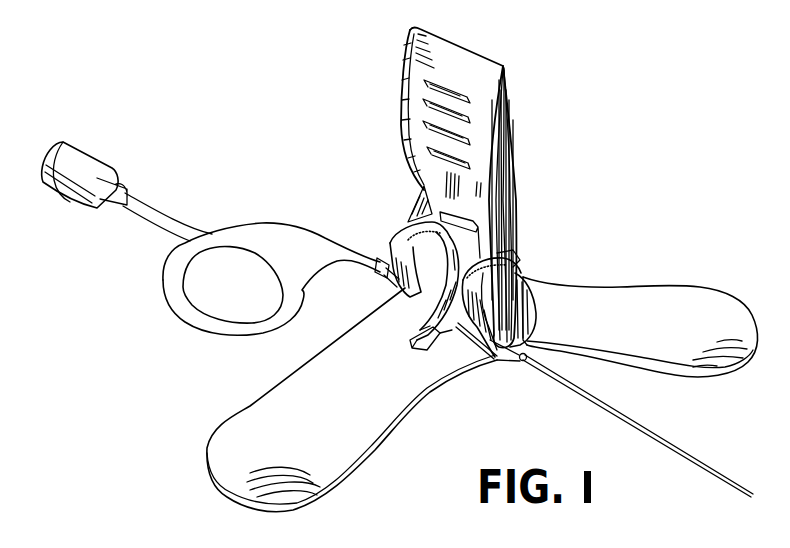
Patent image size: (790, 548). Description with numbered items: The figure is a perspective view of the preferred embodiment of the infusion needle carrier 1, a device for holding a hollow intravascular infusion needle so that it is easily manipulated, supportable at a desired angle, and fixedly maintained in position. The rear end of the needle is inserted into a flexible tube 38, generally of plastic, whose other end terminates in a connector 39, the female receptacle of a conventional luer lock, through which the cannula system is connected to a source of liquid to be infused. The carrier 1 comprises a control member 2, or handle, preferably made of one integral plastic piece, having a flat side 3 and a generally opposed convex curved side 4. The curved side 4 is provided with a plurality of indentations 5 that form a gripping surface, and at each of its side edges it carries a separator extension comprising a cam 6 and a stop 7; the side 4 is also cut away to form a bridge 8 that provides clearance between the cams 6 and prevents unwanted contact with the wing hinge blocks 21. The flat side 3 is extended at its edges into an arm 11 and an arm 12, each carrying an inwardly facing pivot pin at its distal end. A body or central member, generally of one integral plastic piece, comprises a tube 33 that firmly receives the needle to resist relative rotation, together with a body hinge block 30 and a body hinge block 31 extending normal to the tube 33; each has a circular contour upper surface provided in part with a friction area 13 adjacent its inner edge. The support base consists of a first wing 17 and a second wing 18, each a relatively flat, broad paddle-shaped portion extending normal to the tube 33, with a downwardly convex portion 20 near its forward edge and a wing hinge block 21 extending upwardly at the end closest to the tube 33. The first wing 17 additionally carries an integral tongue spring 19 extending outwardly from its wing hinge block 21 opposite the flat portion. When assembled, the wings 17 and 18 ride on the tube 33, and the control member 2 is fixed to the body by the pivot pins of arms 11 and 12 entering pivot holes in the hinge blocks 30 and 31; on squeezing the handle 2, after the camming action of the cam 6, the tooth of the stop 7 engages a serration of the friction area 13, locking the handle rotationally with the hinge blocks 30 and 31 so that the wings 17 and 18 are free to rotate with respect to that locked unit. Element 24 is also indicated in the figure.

The infusion needle carrier 1 is at (473, 188).
The control member 2 is at (510, 71).
The flat side 3 is at (516, 151).
The convex curved side 4 is at (416, 106).
The indentations 5 is at (420, 122).
The cam 6 is at (516, 258).
The stop 7 is at (481, 226).
The bridge 8 is at (428, 223).
The arm 11 is at (516, 306).
The arm 12 is at (414, 200).
The friction area 13 is at (447, 244).
The first wing 17 is at (643, 349).
The second wing 18 is at (378, 432).
The tongue spring 19 is at (415, 333).
The convex portion 20 is at (280, 481).
The wing hinge block 21 is at (446, 246).
The lower leg 24 is at (449, 342).
The body hinge block 30 is at (497, 362).
The body hinge block 31 is at (395, 290).
The tube 33 is at (378, 276).
The flexible tube 38 is at (166, 272).
The connector 39 is at (84, 168).